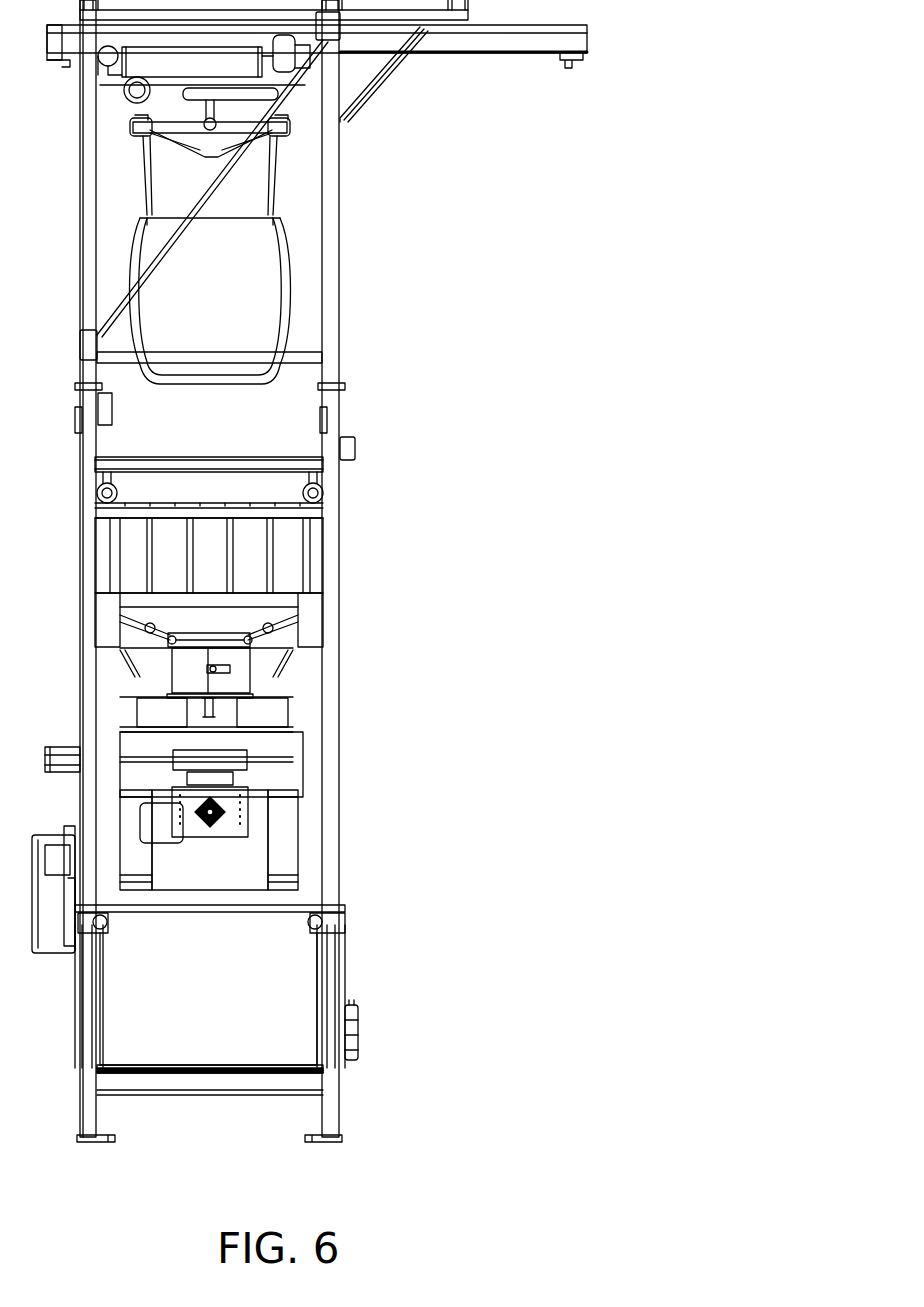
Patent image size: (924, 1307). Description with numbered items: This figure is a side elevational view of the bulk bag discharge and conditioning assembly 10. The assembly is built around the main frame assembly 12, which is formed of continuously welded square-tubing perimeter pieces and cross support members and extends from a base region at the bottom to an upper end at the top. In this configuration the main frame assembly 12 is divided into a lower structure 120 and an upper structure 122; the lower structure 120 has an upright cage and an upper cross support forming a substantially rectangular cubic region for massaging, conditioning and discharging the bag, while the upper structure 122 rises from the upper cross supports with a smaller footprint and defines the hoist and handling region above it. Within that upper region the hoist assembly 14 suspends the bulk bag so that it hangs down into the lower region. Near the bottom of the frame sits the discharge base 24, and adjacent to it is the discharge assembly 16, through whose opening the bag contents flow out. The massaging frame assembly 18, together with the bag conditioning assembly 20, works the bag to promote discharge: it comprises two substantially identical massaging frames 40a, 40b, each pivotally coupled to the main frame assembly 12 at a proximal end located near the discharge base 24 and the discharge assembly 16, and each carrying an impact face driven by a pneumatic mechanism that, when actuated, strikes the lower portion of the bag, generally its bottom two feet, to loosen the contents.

The bulk bag discharge and conditioning assembly 10 is at (508, 408).
The main frame assembly 12 is at (340, 555).
The hoist assembly 14 is at (288, 125).
The discharge assembly 16 is at (250, 670).
The massaging frame assembly 18 is at (92, 625).
The bag conditioning assembly 20 is at (110, 553).
The discharge base 24 is at (130, 642).
The massaging frame 40a is at (115, 607).
The massaging frame 40b is at (280, 620).
The lower structure 120 is at (340, 495).
The upper structure 122 is at (340, 265).